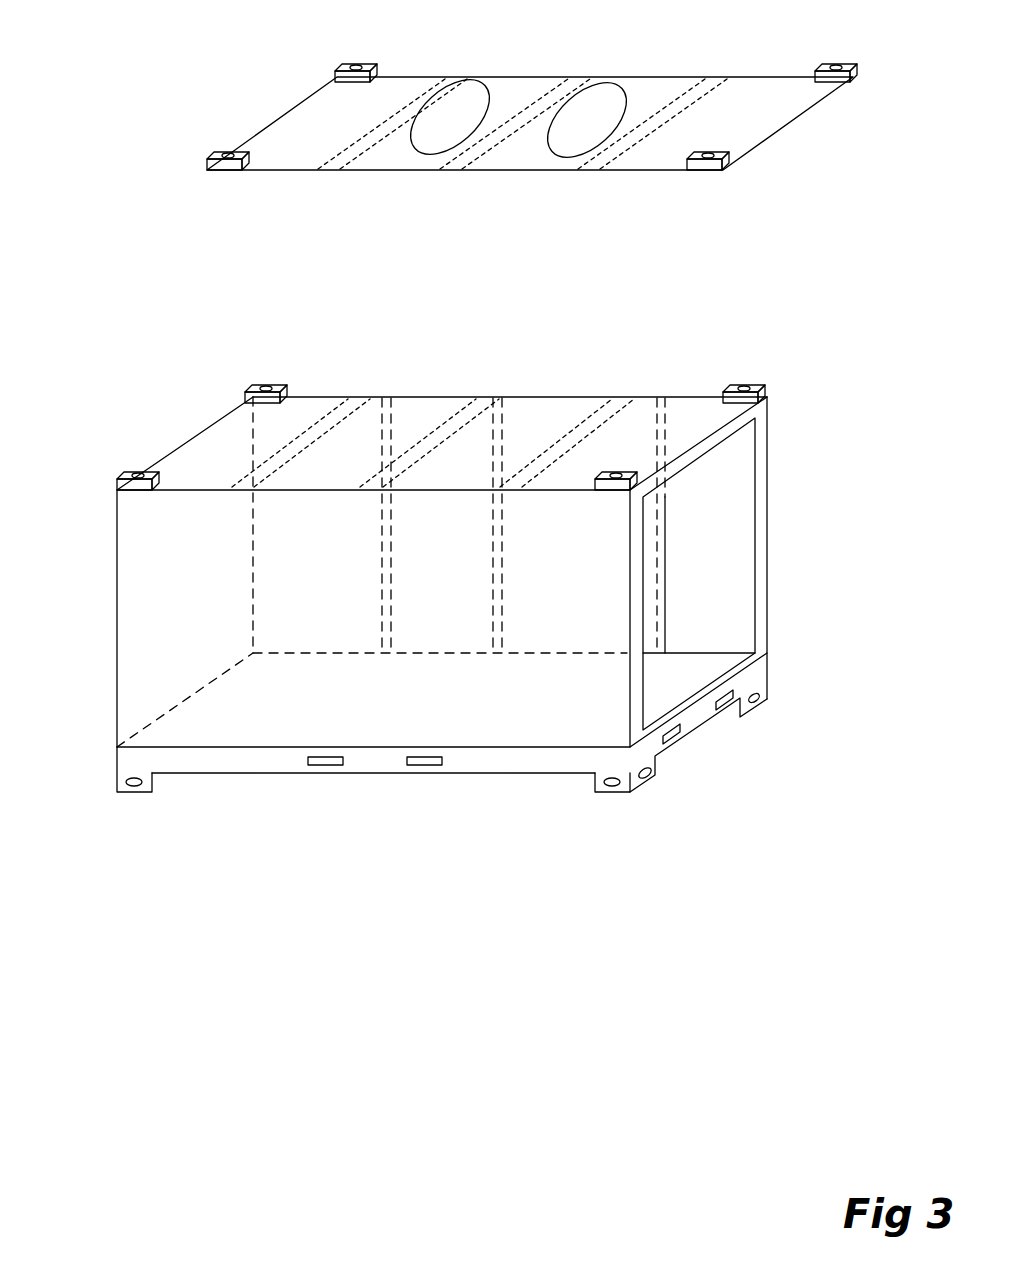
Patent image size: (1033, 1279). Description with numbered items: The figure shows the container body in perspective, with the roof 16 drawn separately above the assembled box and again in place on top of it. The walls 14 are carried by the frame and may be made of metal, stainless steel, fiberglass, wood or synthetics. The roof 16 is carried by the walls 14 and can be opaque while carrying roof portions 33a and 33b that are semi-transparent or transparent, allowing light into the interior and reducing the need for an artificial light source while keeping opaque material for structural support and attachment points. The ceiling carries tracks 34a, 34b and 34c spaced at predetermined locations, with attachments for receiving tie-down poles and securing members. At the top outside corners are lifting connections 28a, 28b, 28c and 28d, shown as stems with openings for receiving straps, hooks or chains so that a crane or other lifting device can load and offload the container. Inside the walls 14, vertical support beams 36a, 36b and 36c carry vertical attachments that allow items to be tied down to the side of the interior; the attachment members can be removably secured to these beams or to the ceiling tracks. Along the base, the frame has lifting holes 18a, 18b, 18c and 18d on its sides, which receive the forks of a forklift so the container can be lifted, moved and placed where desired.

The walls 14 is at (158, 570).
The roof 16 is at (327, 118).
The lifting hole 18a is at (318, 767).
The lifting hole 18b is at (420, 767).
The lifting hole 18c is at (675, 745).
The lifting hole 18d is at (718, 710).
The lifting connection 28a is at (117, 477).
The lifting connection 28b is at (377, 73).
The lifting connection 28c is at (767, 393).
The corner fitting 28d is at (598, 490).
The roof portion 33a is at (433, 143).
The roof portion 33b is at (573, 142).
The track 34a is at (438, 82).
The track 34b is at (563, 82).
The track 34c is at (713, 80).
The vertical support beam 36a is at (391, 550).
The vertical support beam 36b is at (502, 590).
The vertical support beam 36c is at (665, 572).